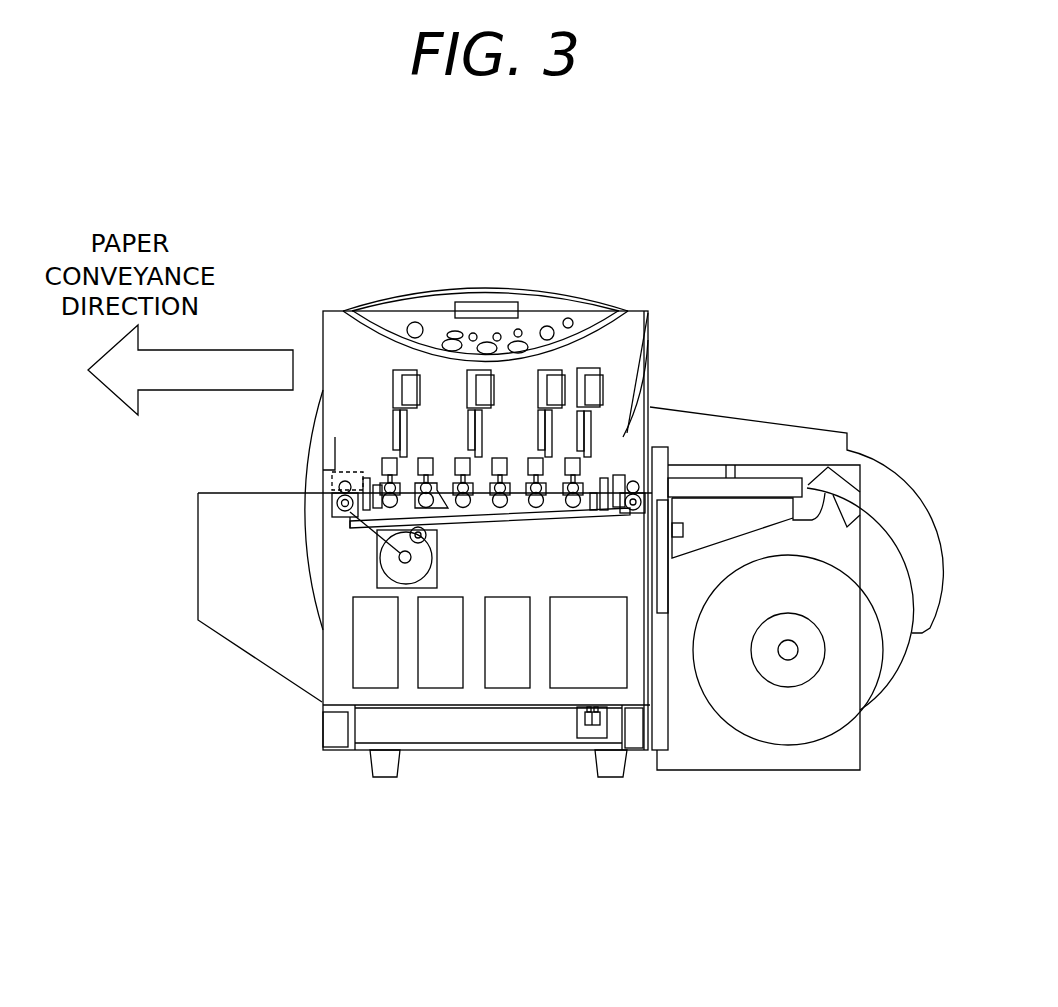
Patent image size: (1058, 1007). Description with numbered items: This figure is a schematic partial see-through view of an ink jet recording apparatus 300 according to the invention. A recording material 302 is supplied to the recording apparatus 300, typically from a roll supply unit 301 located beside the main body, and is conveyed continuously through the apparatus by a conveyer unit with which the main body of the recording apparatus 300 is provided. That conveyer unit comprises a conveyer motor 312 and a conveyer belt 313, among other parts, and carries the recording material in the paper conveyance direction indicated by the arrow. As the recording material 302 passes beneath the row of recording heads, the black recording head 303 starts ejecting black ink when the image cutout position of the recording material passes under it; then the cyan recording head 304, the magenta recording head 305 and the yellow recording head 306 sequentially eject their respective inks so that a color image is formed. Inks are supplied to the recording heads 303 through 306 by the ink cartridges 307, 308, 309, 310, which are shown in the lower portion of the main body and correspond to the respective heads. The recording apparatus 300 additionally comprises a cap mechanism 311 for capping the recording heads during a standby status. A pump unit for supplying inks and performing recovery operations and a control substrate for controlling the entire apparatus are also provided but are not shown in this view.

The recording apparatus 300 is at (322, 345).
The roll supply unit 301 is at (790, 673).
The recording material 302 is at (872, 655).
The black recording head 303 is at (597, 385).
The cyan recording head 304 is at (557, 378).
The magenta recording head 305 is at (482, 382).
The yellow recording head 306 is at (408, 383).
The ink cartridge 307 is at (602, 675).
The ink cartridge 308 is at (510, 677).
The ink cartridge 309 is at (442, 677).
The ink cartridge 310 is at (373, 673).
The cap mechanism 311 is at (583, 463).
The conveyer motor 312 is at (387, 566).
The conveyer belt 313 is at (380, 533).